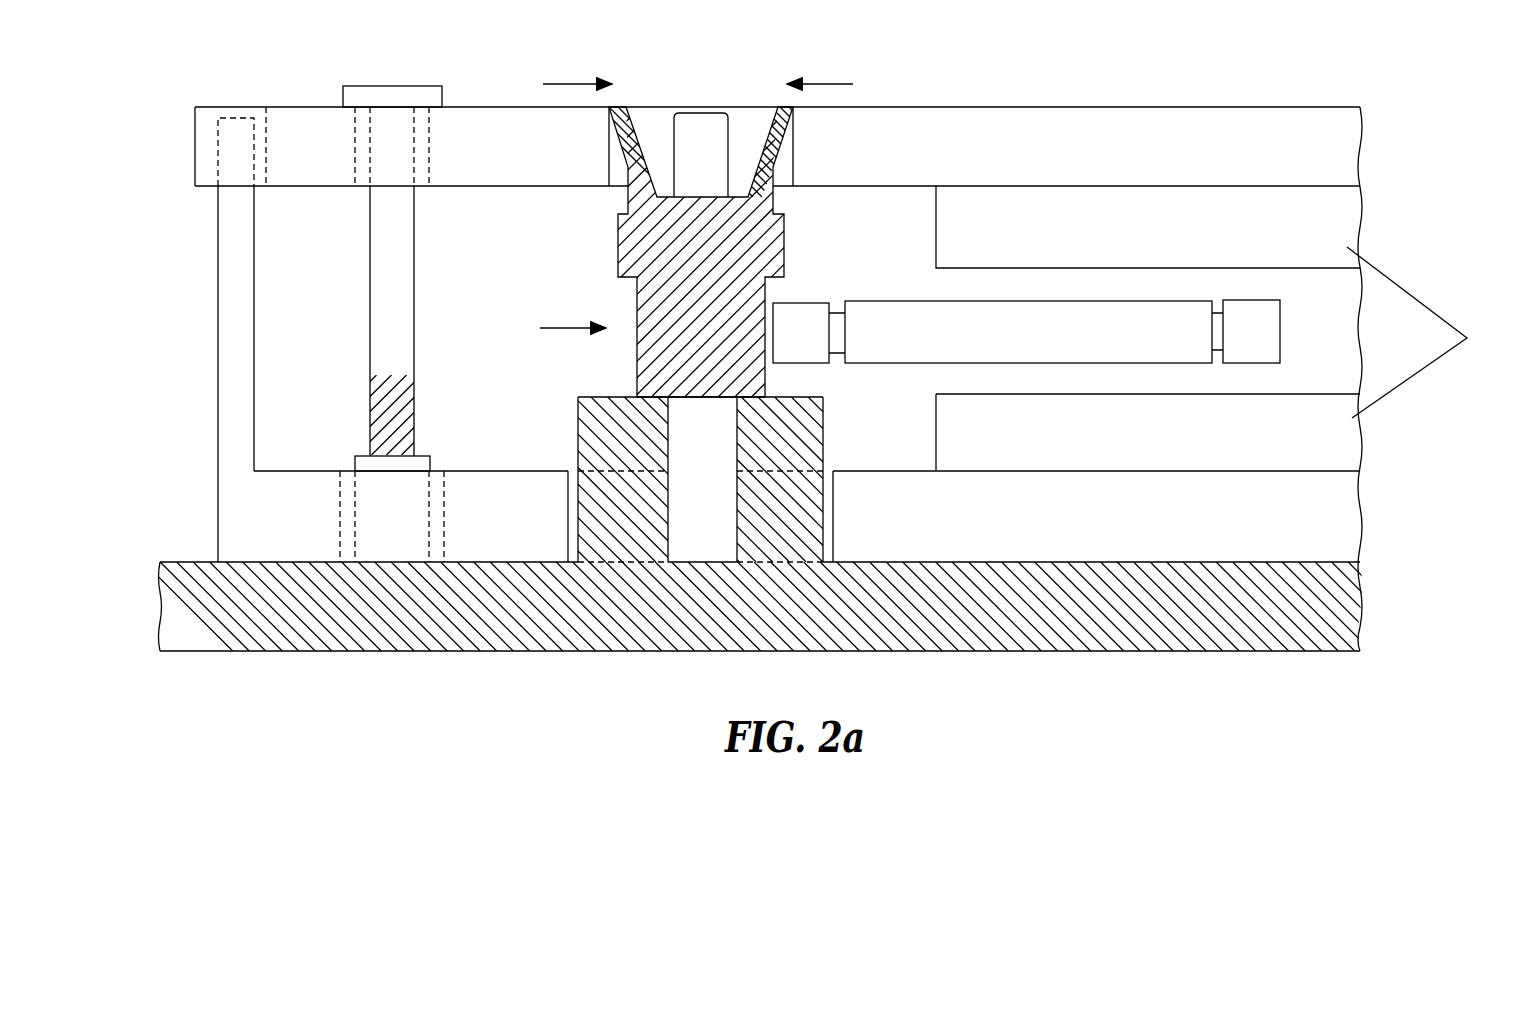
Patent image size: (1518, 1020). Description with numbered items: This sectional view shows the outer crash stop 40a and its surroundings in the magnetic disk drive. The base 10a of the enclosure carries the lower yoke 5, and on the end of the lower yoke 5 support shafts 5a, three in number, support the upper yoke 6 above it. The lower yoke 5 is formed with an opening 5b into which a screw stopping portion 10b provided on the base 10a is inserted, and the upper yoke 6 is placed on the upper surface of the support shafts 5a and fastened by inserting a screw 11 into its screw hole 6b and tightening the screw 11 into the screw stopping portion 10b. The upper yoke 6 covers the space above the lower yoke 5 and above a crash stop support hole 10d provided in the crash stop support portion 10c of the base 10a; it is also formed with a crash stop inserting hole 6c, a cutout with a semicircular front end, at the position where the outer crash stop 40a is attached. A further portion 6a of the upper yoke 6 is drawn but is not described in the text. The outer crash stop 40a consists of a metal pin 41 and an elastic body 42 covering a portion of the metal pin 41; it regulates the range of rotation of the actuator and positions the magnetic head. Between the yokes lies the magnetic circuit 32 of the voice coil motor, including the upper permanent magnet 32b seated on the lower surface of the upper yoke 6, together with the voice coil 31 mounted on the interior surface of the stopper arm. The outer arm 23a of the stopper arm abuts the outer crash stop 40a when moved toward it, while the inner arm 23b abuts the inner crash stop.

The upper yoke 6 is at (1101, 107).
The bore in upper plate 6a is at (237, 107).
The screw hole 6b is at (355, 140).
The crash stop inserting hole 6c is at (744, 113).
The screw 11 is at (422, 86).
The lower yoke 5 is at (1355, 515).
The support shaft 5a is at (253, 347).
The opening 5b is at (338, 518).
The base 10a is at (1188, 651).
The screw stopping portion 10b is at (432, 457).
The crash stop support portion 10c is at (823, 437).
The crash stop support hole 10d is at (697, 560).
The metal pin 41 is at (702, 479).
The elastic body 42 is at (618, 250).
The outer crash stop 40a is at (549, 328).
The outer arm 23a is at (813, 303).
The inner arm 23b is at (1283, 340).
The voice coil 31 is at (899, 365).
The magnetic circuit 32 is at (1425, 332).
The upper permanent magnet 32b is at (1355, 207).